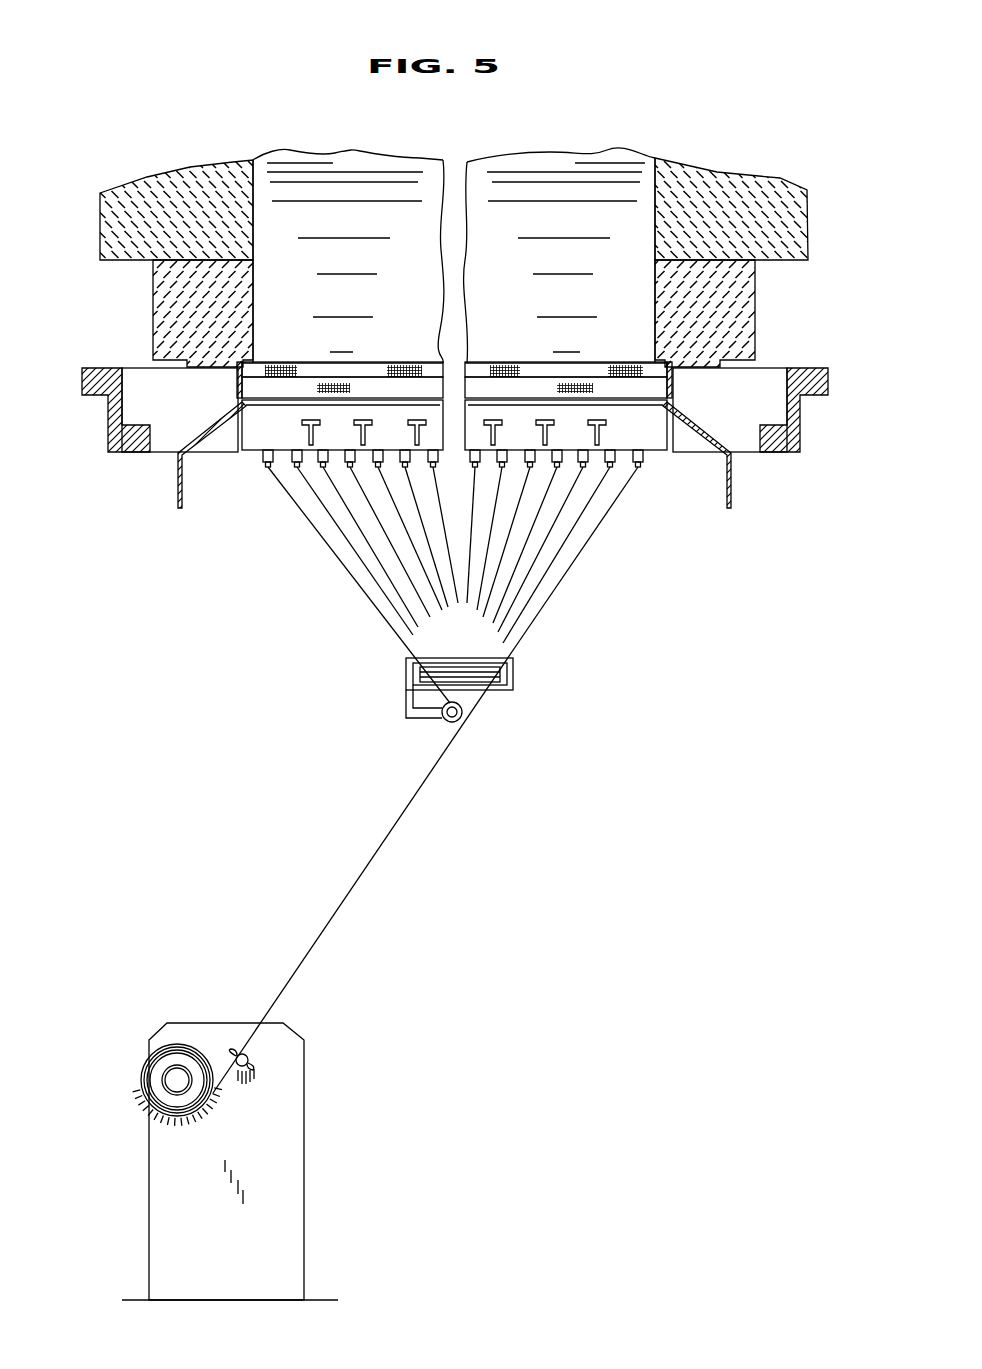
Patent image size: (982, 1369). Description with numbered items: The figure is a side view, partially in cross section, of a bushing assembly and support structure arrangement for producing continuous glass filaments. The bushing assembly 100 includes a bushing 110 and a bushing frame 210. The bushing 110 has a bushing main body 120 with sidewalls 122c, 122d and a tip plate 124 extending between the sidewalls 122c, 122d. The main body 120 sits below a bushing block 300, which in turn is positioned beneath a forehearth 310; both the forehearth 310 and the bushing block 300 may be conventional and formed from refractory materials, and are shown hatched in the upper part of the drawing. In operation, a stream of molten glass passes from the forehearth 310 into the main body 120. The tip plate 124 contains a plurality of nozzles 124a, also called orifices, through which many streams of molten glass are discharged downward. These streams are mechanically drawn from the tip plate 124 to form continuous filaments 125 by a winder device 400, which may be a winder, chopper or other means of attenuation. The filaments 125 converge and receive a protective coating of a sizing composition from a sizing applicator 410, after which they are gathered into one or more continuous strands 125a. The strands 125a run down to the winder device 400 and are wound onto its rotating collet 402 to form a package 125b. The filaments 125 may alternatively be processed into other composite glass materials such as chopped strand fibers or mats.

The bushing assembly 100 is at (235, 588).
The bushing 110 is at (638, 484).
The bushing main body 120 is at (680, 452).
The sidewall 122c is at (235, 387).
The sidewall 122d is at (673, 386).
The tip plate 124 is at (252, 455).
The nozzles 124a is at (285, 460).
The continuous filaments 125 is at (550, 557).
The continuous strands 125a is at (340, 905).
The package 125b is at (175, 1043).
The bushing frame 210 is at (117, 441).
The bushing block 300 is at (737, 305).
The forehearth 310 is at (718, 183).
The winder device 400 is at (318, 1085).
The rotating collet 402 is at (175, 1080).
The sizing applicator 410 is at (480, 718).